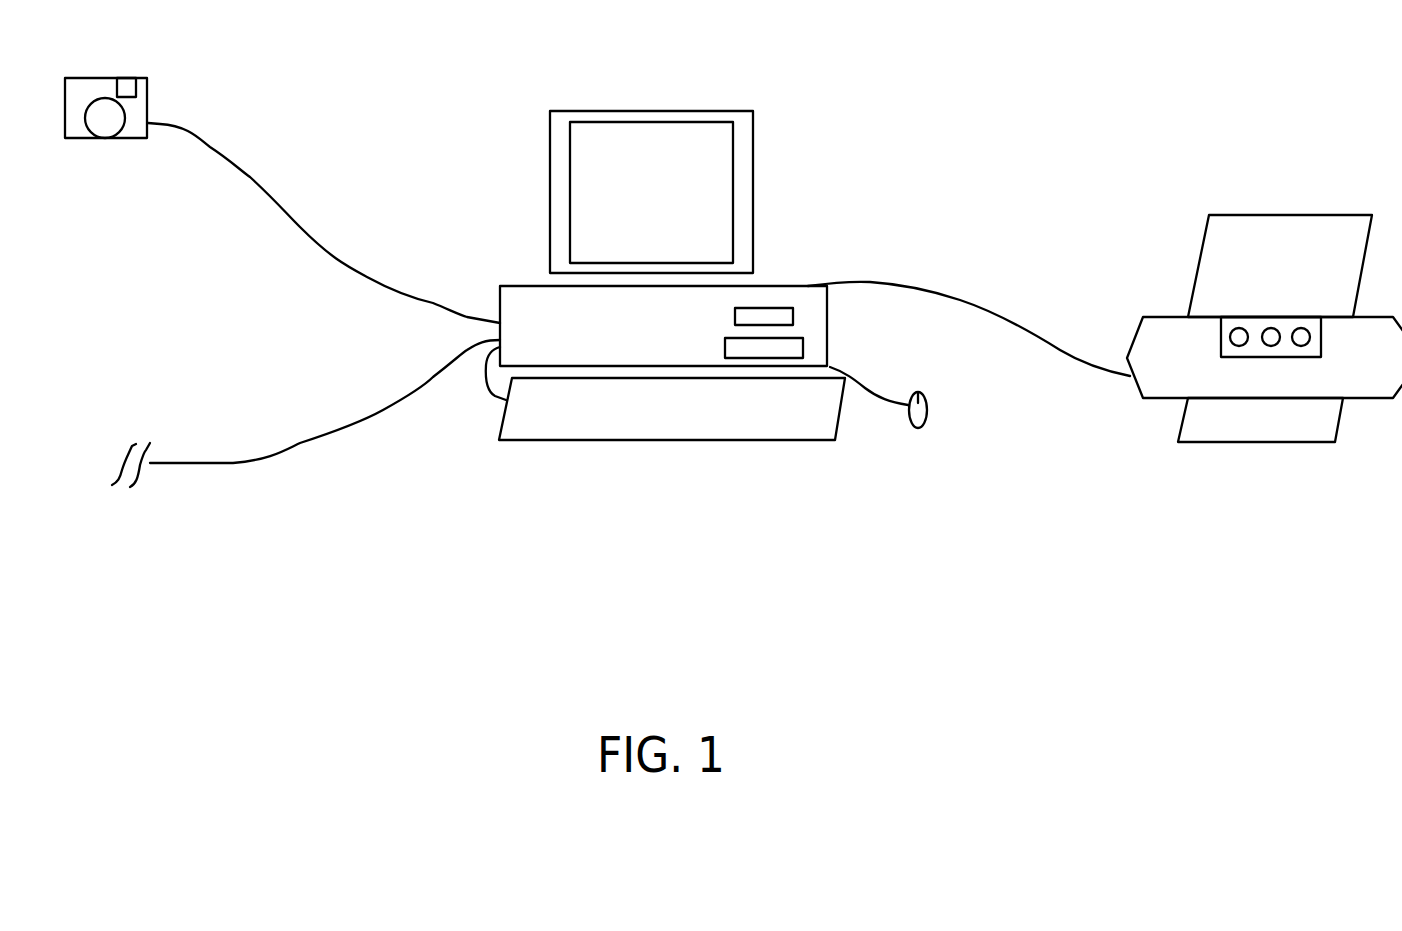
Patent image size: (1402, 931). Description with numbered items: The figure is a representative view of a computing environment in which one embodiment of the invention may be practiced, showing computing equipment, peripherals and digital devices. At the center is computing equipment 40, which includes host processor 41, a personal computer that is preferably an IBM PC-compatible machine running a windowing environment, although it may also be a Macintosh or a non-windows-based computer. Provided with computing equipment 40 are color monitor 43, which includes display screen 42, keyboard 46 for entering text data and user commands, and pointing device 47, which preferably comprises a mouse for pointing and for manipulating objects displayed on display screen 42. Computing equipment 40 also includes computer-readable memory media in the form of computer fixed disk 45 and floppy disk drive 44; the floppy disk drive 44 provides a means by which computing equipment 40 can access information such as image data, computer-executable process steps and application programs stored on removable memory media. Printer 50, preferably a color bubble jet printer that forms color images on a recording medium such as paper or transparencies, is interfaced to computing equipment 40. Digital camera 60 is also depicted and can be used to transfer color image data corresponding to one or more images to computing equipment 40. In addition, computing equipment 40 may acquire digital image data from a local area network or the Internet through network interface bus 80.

The computing equipment 40 is at (749, 92).
The host processor 41 is at (674, 308).
The display screen 42 is at (727, 223).
The color monitor 43 is at (679, 172).
The floppy disk drive 44 is at (797, 316).
The computer fixed disk 45 is at (808, 350).
The keyboard 46 is at (573, 432).
The pointing device 47 is at (930, 420).
The printer 50 is at (1308, 203).
The digital camera 60 is at (170, 82).
The network interface bus 80 is at (284, 508).